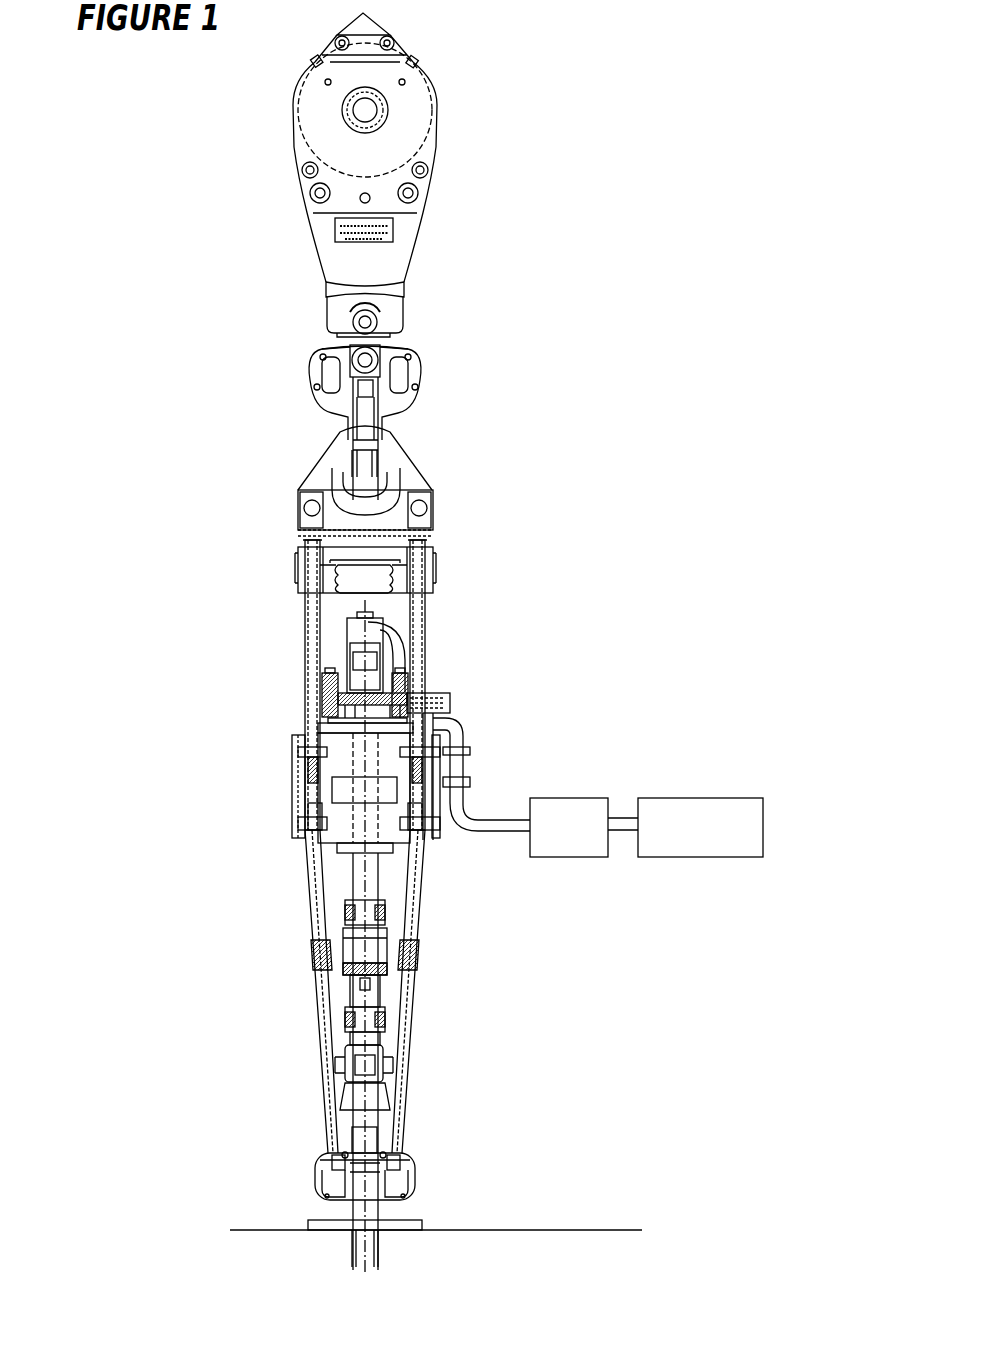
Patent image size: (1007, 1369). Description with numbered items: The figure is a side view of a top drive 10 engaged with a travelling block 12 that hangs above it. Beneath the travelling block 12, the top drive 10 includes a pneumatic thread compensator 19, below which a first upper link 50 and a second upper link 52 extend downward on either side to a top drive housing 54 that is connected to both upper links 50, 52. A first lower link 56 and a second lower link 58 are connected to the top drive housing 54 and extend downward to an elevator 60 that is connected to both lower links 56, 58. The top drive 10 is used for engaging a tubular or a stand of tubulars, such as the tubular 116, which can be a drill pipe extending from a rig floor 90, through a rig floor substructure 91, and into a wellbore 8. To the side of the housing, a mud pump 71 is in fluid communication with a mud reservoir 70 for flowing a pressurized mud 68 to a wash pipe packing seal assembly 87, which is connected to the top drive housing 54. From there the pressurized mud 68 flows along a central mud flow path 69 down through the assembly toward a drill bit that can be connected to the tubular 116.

The wellbore 8 is at (353, 1253).
The top drive 10 is at (383, 1200).
The travelling block 12 is at (363, 13).
The pneumatic thread compensator 19 is at (300, 593).
The first upper link 50 is at (312, 657).
The second upper link 52 is at (420, 657).
The top drive housing 54 is at (393, 832).
The first lower link 56 is at (323, 1017).
The second lower link 58 is at (407, 1017).
The elevator 60 is at (417, 1187).
The pressurized mud 68 is at (490, 823).
The central mud flow path 69 is at (363, 873).
The mud reservoir 70 is at (698, 798).
The mud pump 71 is at (568, 798).
The wash pipe packing seal assembly 87 is at (338, 645).
The rig floor 90 is at (418, 1218).
The rig floor substructure 91 is at (537, 1228).
The tubular 116 is at (378, 1253).